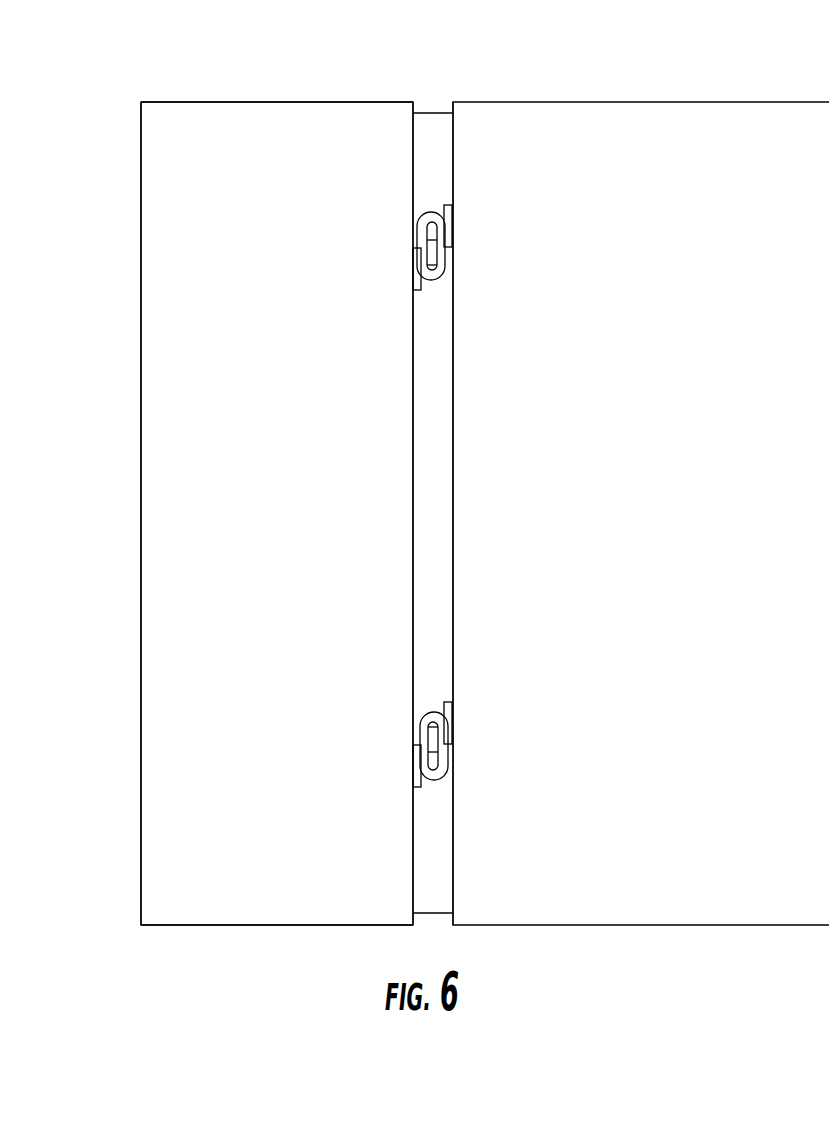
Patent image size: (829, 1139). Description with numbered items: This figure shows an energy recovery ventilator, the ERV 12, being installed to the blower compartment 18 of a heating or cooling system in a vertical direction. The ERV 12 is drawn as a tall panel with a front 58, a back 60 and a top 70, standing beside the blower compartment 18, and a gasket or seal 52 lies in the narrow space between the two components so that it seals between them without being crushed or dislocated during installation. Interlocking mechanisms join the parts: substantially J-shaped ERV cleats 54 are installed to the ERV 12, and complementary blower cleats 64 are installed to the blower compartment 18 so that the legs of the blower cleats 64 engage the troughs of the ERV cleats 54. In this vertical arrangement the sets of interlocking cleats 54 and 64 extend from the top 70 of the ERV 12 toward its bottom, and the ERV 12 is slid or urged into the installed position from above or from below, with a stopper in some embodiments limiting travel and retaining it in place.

The ERV 12 is at (292, 525).
The blower compartment 18 is at (708, 515).
The gasket or seal 52 is at (428, 433).
The ERV cleats 54 is at (420, 268).
The front of the ERV 58 is at (262, 926).
The back of the ERV 60 is at (272, 101).
The blower cleats 64 is at (448, 268).
The top of the ERV 70 is at (141, 360).